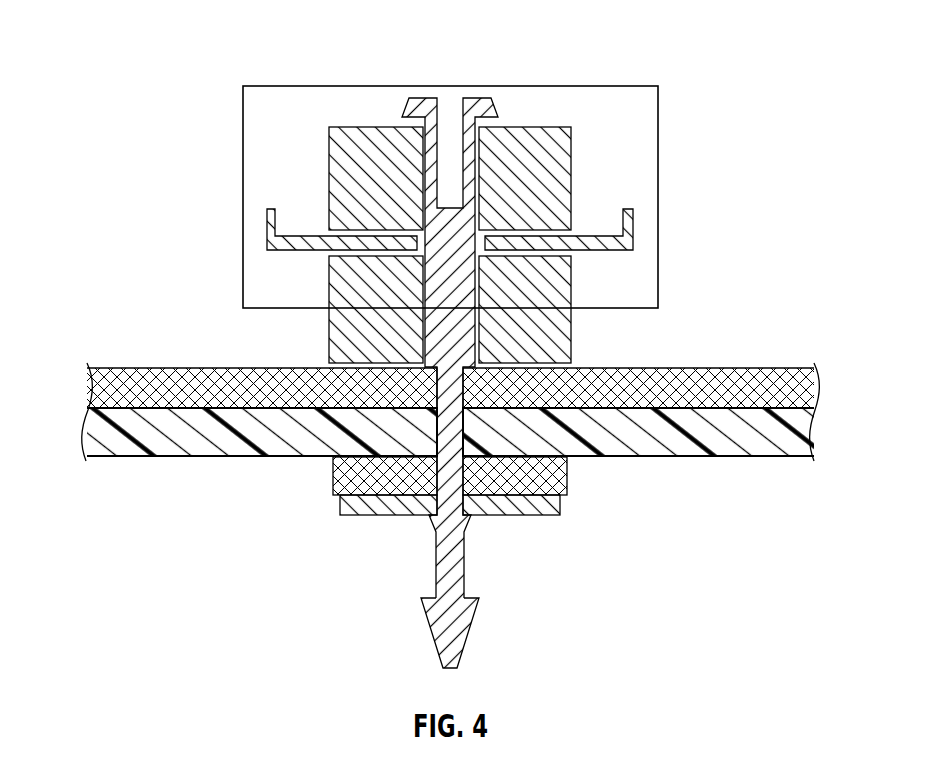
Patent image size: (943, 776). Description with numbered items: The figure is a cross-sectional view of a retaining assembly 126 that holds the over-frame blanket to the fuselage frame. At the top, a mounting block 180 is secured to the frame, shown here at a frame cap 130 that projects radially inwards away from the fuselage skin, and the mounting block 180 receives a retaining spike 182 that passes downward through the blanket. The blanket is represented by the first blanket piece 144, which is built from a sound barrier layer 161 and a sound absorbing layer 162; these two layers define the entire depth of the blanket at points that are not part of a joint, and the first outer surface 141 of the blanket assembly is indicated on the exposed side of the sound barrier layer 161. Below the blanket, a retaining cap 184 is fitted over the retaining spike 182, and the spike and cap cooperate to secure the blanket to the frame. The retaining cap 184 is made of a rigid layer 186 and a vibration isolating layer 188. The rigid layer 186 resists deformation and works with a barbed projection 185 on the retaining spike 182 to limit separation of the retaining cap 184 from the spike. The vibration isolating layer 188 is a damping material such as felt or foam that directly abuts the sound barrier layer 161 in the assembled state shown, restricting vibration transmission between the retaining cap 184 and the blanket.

The retaining assembly 126 is at (160, 56).
The frame cap 130 is at (267, 93).
The mounting block 180 is at (548, 127).
The barbed projection 185 is at (466, 521).
The retaining spike 182 is at (437, 632).
The first blanket piece 144 is at (123, 348).
The sound absorbing layer 162 is at (92, 382).
The sound barrier layer 161 is at (92, 425).
The first outer surface 141 is at (170, 457).
The vibration isolating layer 188 is at (333, 480).
The retaining cap 184 is at (340, 505).
The rigid layer 186 is at (560, 505).